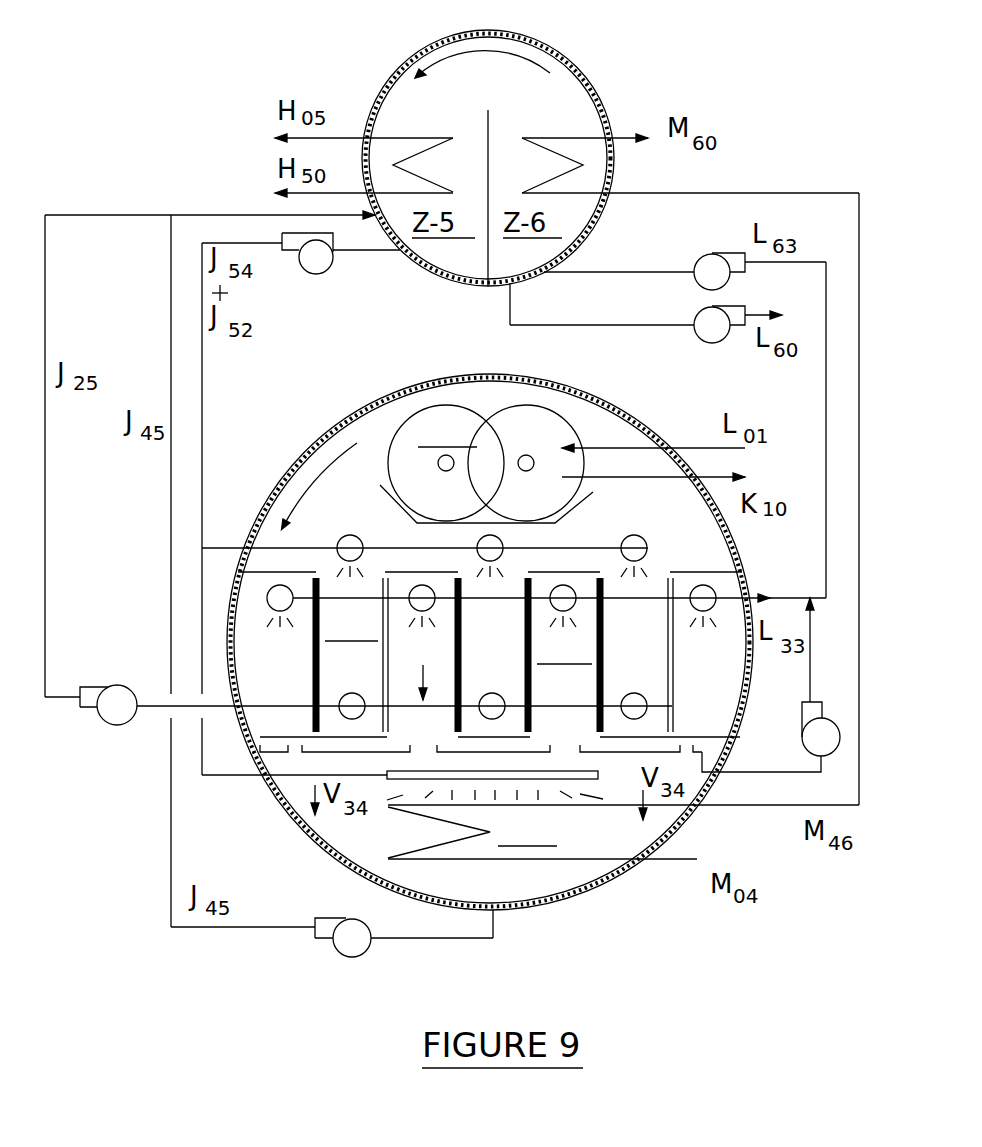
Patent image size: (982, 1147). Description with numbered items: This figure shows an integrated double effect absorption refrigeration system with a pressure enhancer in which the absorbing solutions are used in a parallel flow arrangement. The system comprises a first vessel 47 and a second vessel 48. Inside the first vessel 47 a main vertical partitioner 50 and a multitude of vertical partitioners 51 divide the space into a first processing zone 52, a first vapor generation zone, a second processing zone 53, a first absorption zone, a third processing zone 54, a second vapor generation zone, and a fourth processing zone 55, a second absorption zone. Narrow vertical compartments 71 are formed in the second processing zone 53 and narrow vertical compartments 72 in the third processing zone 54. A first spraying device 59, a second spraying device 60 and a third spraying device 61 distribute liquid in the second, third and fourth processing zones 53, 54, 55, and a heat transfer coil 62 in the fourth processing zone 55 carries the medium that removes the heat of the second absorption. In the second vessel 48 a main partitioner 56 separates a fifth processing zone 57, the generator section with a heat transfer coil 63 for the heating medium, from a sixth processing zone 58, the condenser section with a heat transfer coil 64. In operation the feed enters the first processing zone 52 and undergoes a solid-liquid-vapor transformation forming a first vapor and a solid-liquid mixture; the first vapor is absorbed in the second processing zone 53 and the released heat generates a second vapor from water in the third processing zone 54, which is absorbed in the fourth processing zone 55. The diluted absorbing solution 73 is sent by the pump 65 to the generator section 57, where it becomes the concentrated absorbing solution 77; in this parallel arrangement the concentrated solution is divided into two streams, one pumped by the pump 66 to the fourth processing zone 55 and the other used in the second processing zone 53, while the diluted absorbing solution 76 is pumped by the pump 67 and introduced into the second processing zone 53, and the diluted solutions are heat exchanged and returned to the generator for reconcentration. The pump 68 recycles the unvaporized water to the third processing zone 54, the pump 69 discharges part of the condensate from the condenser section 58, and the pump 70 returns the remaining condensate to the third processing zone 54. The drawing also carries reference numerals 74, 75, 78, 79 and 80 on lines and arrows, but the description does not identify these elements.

The first vessel 47 is at (583, 385).
The second vessel 48 is at (587, 63).
The main vertical partitioner 50 is at (298, 758).
The vertical partitioners 51 is at (317, 570).
The first processing zone 52 is at (470, 509).
The second processing zone 53 is at (367, 676).
The third processing zone 54 is at (580, 699).
The fourth processing zone 55 is at (627, 846).
The main partitioner 56 is at (493, 140).
The fifth processing zone 57 is at (475, 184).
The sixth processing zone 58 is at (538, 184).
The first spraying device 59 is at (640, 533).
The second spraying device 60 is at (400, 590).
The third spraying device 61 is at (545, 771).
The heat transfer coil 62 is at (505, 860).
The heat transfer coil 63 is at (364, 154).
The heat transfer coil 64 is at (690, 152).
The pump 65 is at (100, 688).
The pump 66 is at (325, 273).
The pump 67 is at (340, 917).
The pump 68 is at (827, 733).
The pump 69 is at (708, 318).
The pump 70 is at (708, 262).
The narrow vertical compartments 71 is at (522, 660).
The narrow vertical compartments 72 is at (678, 667).
The diluted absorbing solution 73 is at (157, 703).
The air flow arrow 74 is at (437, 685).
The deflector 75 is at (420, 817).
The diluted absorbing solution 76 is at (497, 930).
The concentrated absorbing solution 77 is at (367, 253).
The return line 78 is at (761, 758).
The connecting line 79 is at (602, 304).
The connecting line 80 is at (619, 255).